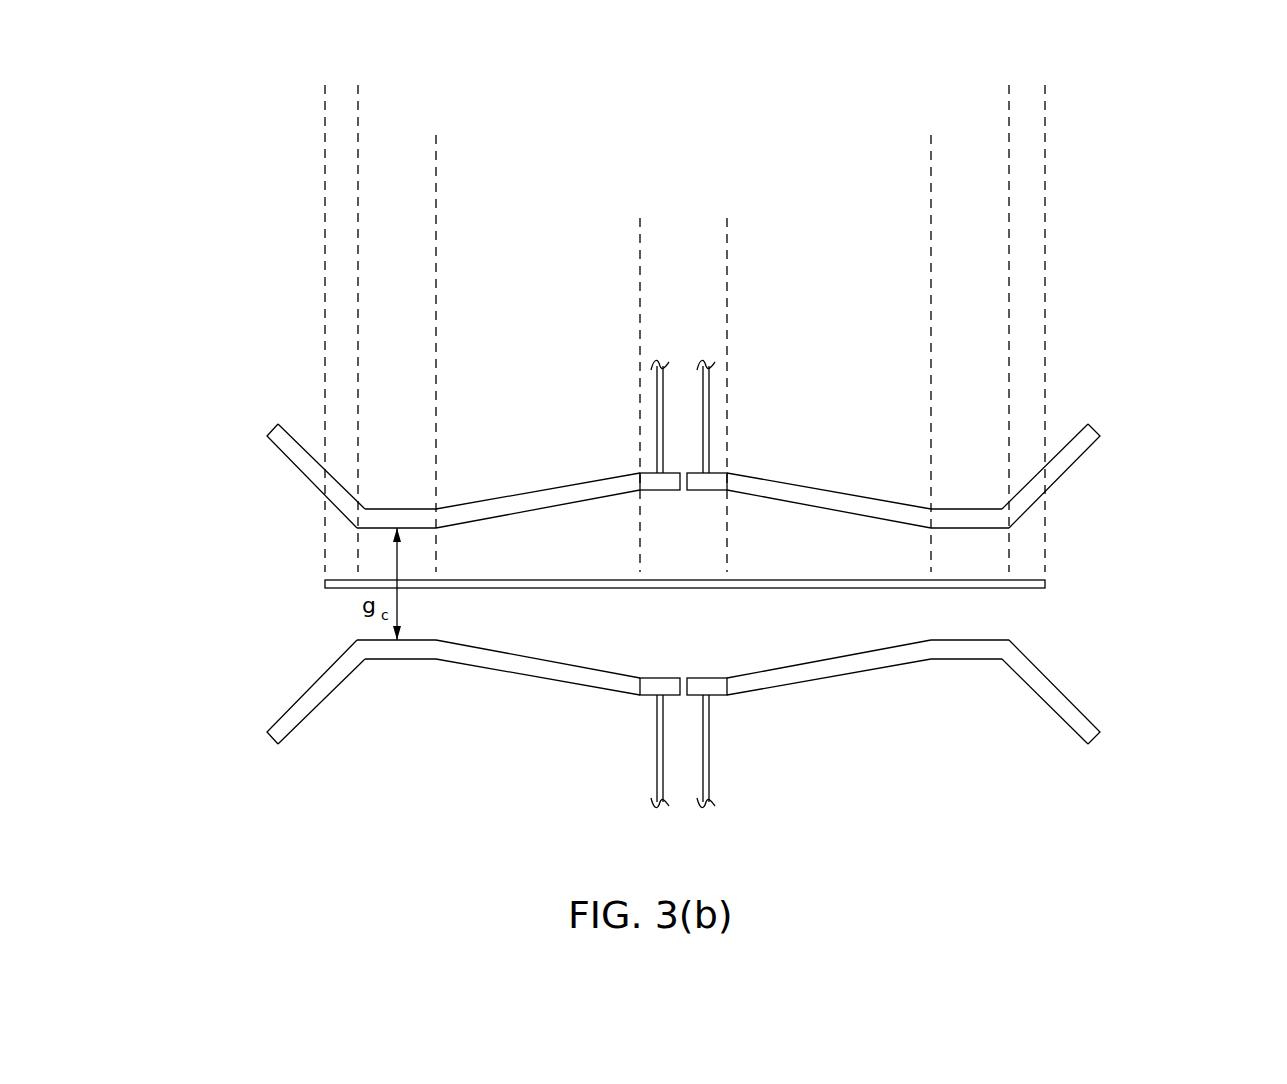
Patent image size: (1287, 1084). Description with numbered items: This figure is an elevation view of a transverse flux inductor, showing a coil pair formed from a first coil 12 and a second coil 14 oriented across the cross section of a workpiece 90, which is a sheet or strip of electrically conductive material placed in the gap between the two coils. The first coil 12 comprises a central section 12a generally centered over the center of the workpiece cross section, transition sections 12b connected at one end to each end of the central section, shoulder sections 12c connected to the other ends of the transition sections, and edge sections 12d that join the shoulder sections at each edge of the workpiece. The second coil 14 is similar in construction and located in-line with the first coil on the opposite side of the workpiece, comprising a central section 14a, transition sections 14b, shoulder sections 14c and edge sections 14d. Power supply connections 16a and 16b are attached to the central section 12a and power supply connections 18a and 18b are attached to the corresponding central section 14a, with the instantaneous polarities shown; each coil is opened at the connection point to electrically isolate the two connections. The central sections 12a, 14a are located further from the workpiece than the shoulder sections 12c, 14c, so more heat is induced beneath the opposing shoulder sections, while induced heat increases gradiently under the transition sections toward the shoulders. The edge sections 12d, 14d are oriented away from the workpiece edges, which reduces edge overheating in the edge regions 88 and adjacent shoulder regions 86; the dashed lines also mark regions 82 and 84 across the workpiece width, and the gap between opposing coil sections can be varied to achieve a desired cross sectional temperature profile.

The first coil 12 is at (719, 456).
The central section 12a is at (702, 483).
The transition section 12b is at (543, 500).
The shoulder section 12c is at (402, 522).
The edge section 12d is at (302, 460).
The second coil 14 is at (657, 715).
The central section 14a is at (702, 682).
The transition section 14b is at (520, 663).
The shoulder section 14c is at (396, 650).
The edge section 14d is at (310, 702).
The power supply connection 16a is at (709, 418).
The power supply connection 16b is at (657, 418).
The power supply connection 18a is at (705, 732).
The power supply connection 18b is at (660, 732).
The region 82 is at (727, 233).
The region 84 is at (640, 308).
The shoulder region 86 is at (358, 172).
The edge region 88 is at (277, 109).
The workpiece 90 is at (1045, 584).